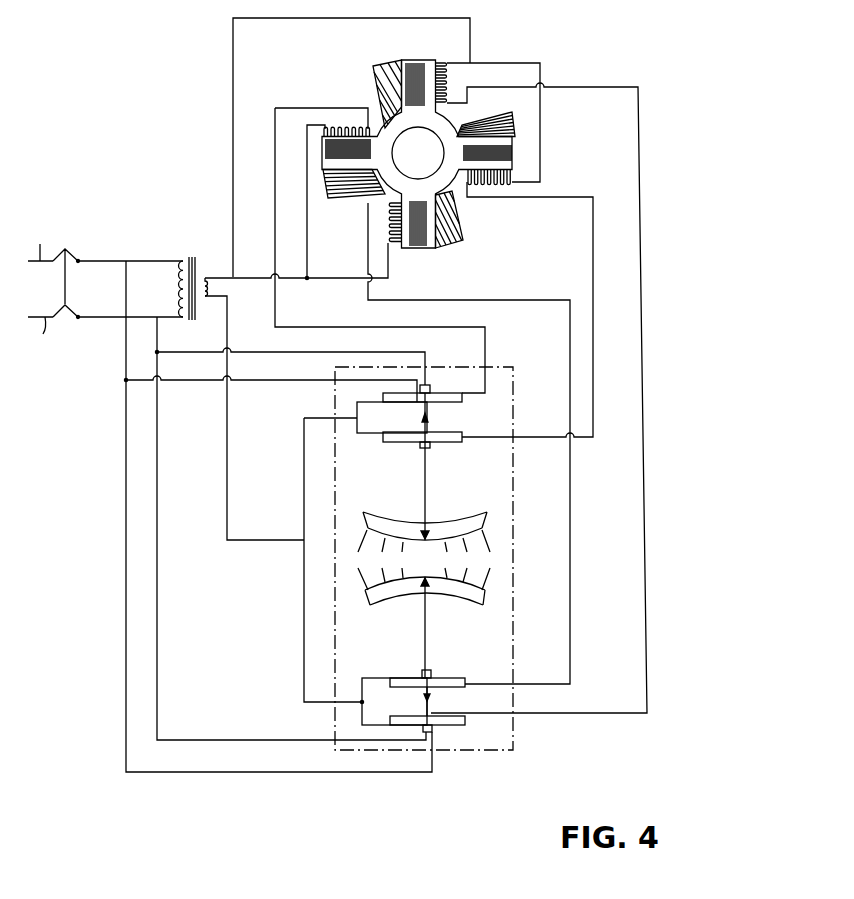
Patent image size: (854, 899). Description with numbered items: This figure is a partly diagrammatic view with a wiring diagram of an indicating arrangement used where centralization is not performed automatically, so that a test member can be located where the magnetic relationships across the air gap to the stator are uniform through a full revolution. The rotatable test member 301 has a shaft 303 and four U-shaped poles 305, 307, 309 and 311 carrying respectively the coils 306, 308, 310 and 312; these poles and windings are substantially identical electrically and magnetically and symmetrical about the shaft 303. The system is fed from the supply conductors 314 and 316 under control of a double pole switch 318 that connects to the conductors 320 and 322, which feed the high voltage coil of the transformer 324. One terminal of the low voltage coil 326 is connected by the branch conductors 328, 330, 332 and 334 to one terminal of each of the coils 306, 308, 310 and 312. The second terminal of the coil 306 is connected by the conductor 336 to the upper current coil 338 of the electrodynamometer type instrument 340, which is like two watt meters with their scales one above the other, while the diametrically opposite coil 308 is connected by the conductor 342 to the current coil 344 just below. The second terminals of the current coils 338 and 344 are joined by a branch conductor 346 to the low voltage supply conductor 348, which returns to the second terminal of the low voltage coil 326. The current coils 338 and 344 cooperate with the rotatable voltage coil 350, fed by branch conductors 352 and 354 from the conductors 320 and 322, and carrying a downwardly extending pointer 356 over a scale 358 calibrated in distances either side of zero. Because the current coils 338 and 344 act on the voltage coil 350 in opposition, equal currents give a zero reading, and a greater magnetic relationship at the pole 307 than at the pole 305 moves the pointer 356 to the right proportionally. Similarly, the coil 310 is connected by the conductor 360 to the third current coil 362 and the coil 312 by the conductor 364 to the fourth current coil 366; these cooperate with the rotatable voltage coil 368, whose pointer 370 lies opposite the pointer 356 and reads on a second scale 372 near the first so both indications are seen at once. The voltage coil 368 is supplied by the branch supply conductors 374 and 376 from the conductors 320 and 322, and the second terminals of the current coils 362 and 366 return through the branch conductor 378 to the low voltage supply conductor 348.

The rotatable test member 301 is at (386, 122).
The shaft 303 is at (393, 168).
The U-shaped pole 305 is at (323, 168).
The coil 306 is at (348, 127).
The U-shaped pole 307 is at (507, 140).
The coil 308 is at (483, 183).
The U-shaped pole 309 is at (431, 243).
The coil 310 is at (392, 248).
The U-shaped pole 311 is at (407, 62).
The coil 312 is at (446, 82).
The supply conductor 314 is at (44, 241).
The supply conductor 316 is at (45, 339).
The double pole switch 318 is at (67, 244).
The conductor 320 is at (151, 259).
The conductor 322 is at (100, 318).
The transformer 324 is at (176, 298).
The low voltage coil 326 is at (206, 287).
The branch conductor 328 is at (308, 244).
The branch conductor 330 is at (455, 18).
The branch conductor 332 is at (541, 130).
The branch conductor 334 is at (330, 279).
The conductor 336 is at (437, 327).
The upper current coil 338 is at (452, 402).
The electrodynamometer type instrument 340 is at (442, 580).
The conductor 342 is at (590, 259).
The current coil 344 is at (448, 442).
The branch conductor 346 is at (302, 466).
The low voltage supply conductor 348 is at (229, 438).
The rotatable voltage coil 350 is at (417, 408).
The branch conductor 352 is at (283, 352).
The branch conductor 354 is at (290, 380).
The pointer 356 is at (422, 477).
The scale 358 is at (447, 530).
The conductor 360 is at (574, 548).
The third current coil 362 is at (452, 679).
The conductor 364 is at (646, 400).
The fourth current coil 366 is at (455, 726).
The rotatable voltage coil 368 is at (434, 702).
The pointer 370 is at (428, 630).
The second scale 372 is at (388, 591).
The branch supply conductor 374 is at (227, 773).
The branch supply conductor 376 is at (219, 740).
The branch conductor 378 is at (303, 633).